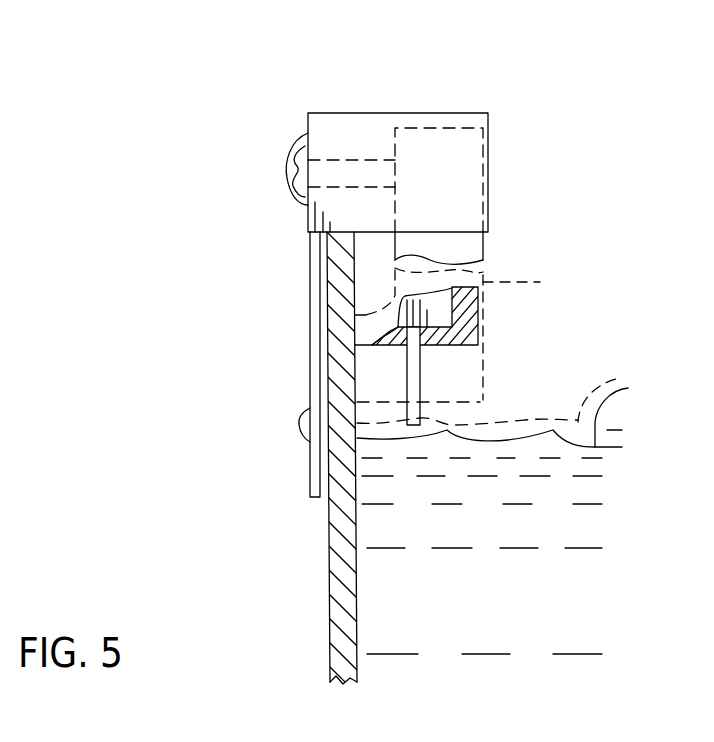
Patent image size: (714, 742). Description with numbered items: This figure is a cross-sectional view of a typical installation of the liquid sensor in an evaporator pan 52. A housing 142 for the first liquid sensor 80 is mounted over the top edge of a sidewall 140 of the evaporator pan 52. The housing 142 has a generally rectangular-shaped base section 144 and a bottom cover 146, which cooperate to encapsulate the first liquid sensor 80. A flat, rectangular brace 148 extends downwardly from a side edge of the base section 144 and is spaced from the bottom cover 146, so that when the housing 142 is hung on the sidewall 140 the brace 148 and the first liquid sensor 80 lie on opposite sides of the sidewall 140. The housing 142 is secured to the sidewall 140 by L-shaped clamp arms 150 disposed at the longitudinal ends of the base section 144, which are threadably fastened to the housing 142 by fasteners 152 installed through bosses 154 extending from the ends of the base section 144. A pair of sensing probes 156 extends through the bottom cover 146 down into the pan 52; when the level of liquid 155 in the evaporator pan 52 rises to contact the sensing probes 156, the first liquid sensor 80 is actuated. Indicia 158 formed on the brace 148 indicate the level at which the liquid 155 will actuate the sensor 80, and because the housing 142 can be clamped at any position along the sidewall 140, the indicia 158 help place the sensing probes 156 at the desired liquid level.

The housing 142 is at (512, 68).
The base section 144 is at (358, 104).
The bosses 154 is at (455, 113).
The fasteners 152 is at (292, 164).
The L-shaped clamp arms 150 is at (485, 253).
The bottom cover 146 is at (466, 346).
The first liquid sensor 80 is at (452, 315).
The sensing probes 156 is at (420, 370).
The liquid 155 is at (628, 388).
The sidewall 140 is at (328, 540).
The evaporator pan 52 is at (316, 600).
The brace 148 is at (310, 354).
The indicia 158 is at (299, 427).